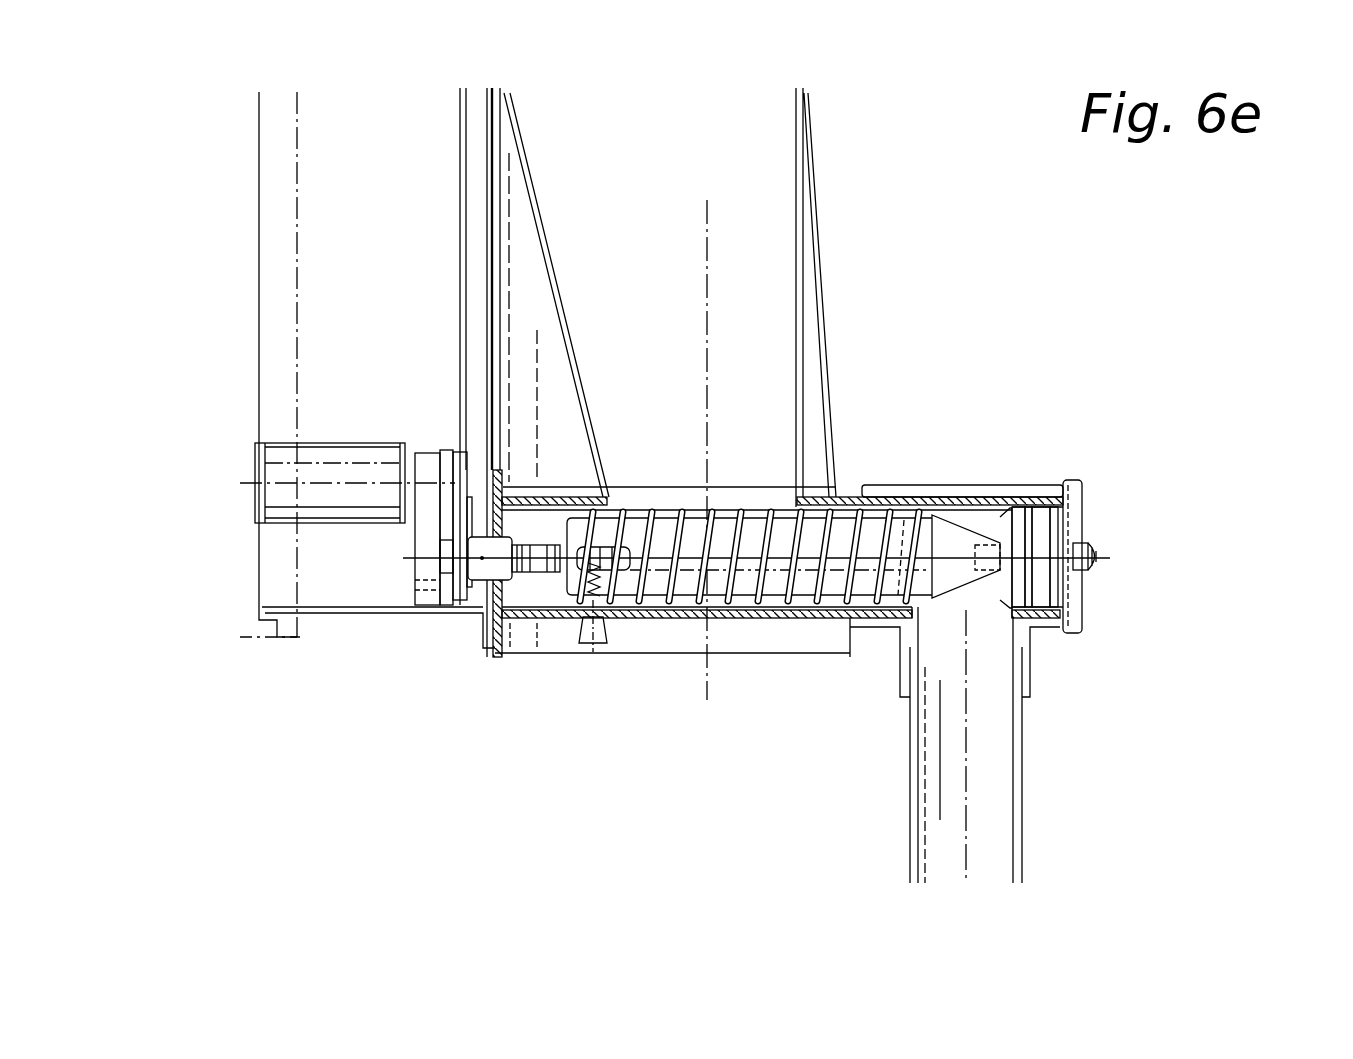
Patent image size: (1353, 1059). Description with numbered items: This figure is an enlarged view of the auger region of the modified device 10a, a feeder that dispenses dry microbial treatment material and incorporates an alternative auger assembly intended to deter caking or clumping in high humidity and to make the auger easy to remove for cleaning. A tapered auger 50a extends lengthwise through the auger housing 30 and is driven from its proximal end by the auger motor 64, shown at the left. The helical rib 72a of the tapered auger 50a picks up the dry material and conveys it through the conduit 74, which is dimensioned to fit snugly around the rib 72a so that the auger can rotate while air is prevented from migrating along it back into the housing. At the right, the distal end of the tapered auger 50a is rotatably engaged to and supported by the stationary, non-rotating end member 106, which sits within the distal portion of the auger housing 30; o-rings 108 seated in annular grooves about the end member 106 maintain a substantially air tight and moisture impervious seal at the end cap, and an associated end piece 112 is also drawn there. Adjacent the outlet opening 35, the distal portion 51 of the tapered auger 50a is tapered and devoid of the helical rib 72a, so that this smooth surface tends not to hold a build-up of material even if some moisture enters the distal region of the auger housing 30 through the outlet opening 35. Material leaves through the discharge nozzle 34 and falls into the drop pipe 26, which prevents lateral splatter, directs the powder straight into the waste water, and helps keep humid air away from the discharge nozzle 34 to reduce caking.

The modified device 10a is at (849, 255).
The tapered auger 50a is at (735, 505).
The auger housing 30 is at (878, 483).
The conduit 74 is at (960, 516).
The distal portion 51 is at (1014, 530).
The pin 112 is at (1002, 551).
The end member 106 is at (1042, 578).
The o-rings 108 is at (1052, 596).
The auger motor 64 is at (395, 515).
The helical rib 72a is at (753, 587).
The outlet opening 35 is at (945, 619).
The discharge nozzle 34 is at (1030, 663).
The drop pipe 26 is at (1022, 760).